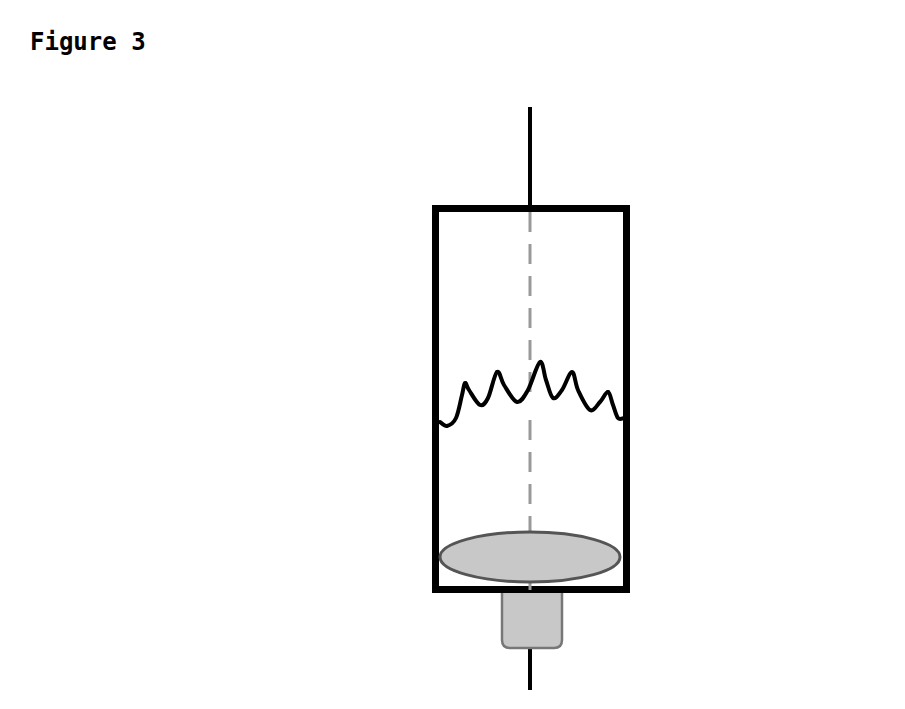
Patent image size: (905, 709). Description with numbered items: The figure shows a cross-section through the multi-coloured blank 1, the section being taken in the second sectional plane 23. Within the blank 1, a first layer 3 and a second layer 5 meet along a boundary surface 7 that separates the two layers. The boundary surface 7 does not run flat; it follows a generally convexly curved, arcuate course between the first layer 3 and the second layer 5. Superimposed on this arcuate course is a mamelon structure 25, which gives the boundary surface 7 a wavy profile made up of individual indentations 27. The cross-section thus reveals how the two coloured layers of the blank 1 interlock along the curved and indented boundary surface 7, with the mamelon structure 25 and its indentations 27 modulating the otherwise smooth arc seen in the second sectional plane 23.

The multi-coloured blank 1 is at (650, 192).
The first layer 3 is at (470, 473).
The second layer 5 is at (470, 250).
The boundary surface 7 is at (627, 415).
The second sectional plane 23 is at (495, 238).
The mamelon structure 25 is at (602, 368).
The indentations 27 is at (487, 382).